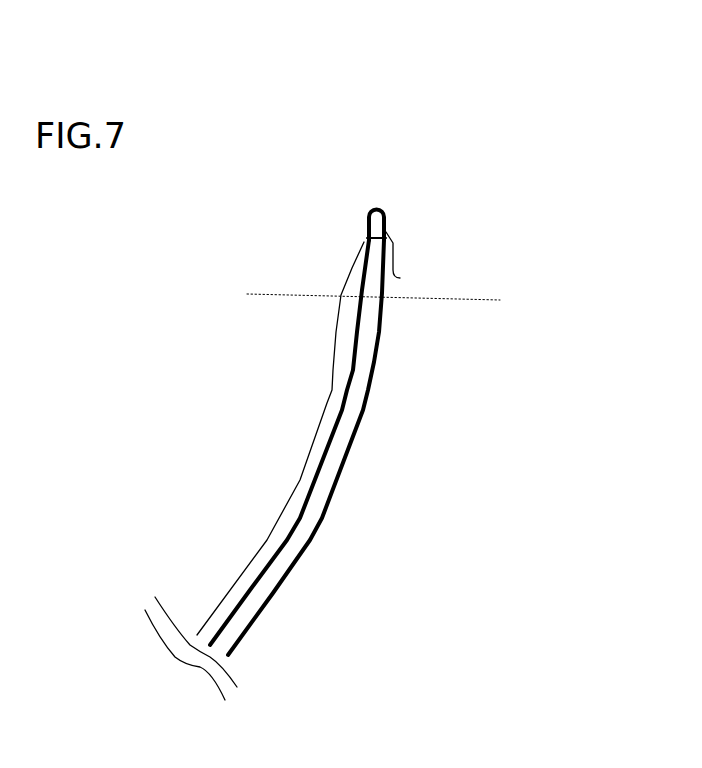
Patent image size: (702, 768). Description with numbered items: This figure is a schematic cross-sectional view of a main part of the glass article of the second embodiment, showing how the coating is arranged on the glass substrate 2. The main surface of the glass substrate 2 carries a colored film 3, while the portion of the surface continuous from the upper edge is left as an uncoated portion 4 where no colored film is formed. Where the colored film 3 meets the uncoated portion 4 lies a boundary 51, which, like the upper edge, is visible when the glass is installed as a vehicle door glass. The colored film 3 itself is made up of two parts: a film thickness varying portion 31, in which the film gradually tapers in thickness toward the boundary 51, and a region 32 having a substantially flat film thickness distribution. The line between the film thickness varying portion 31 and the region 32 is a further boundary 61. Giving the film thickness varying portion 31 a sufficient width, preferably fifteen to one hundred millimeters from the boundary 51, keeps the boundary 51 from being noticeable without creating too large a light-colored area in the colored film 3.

The glass substrate 2 is at (255, 593).
The colored film 3 is at (290, 477).
The uncoated portion 4 is at (366, 229).
The film thickness varying portion 31 is at (382, 293).
The region having a substantially flat film thickness distribution 32 is at (342, 402).
The boundary 51 is at (400, 278).
The boundary 61 is at (338, 295).